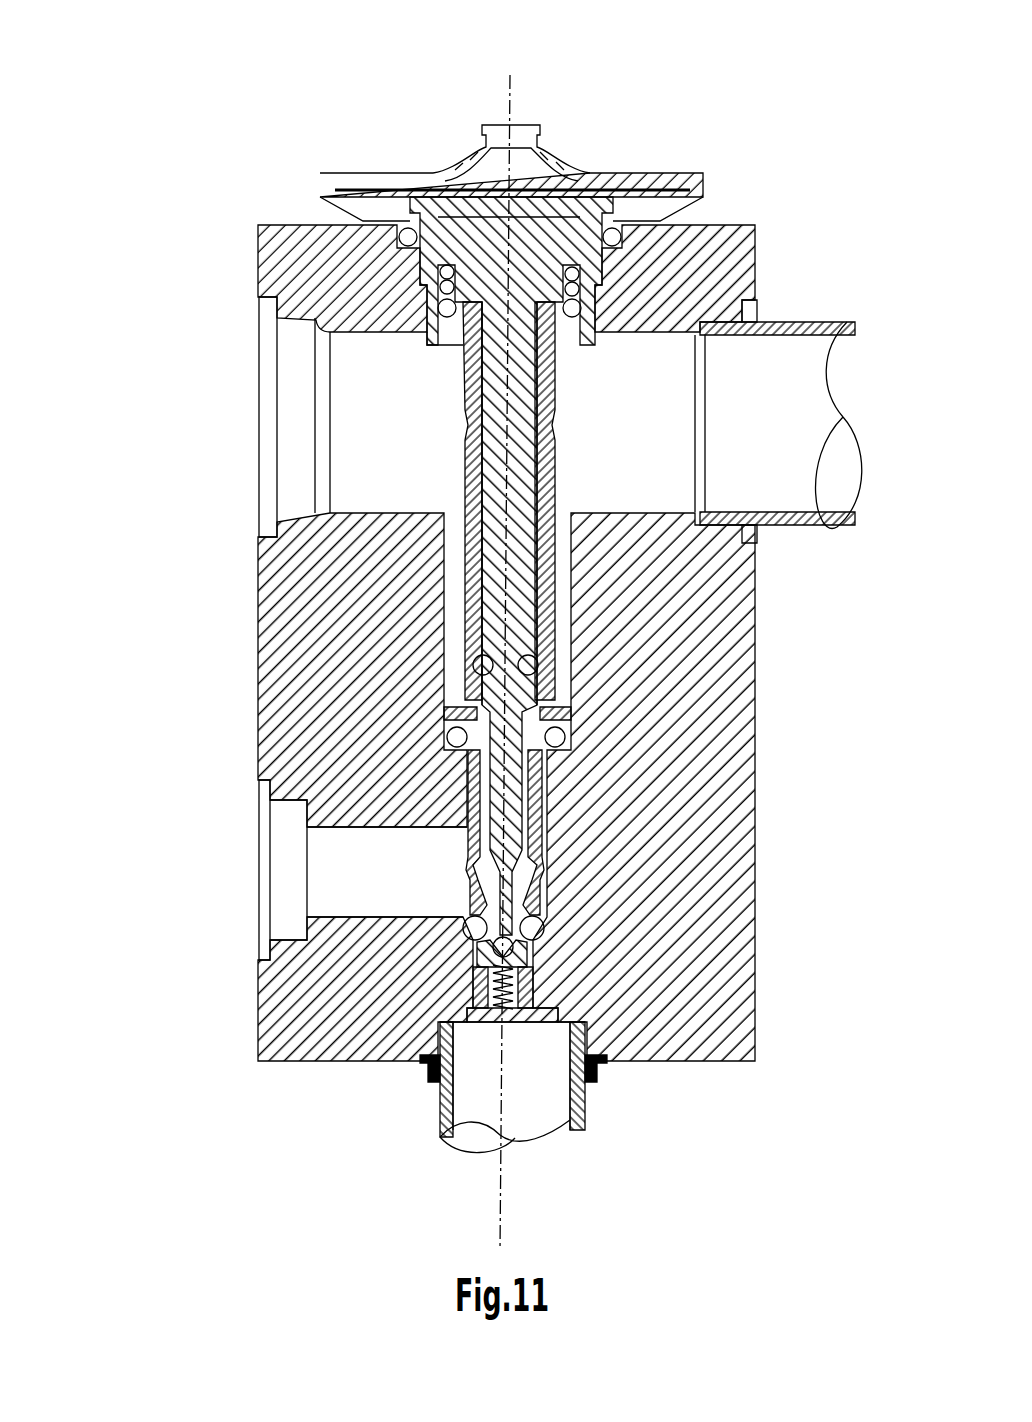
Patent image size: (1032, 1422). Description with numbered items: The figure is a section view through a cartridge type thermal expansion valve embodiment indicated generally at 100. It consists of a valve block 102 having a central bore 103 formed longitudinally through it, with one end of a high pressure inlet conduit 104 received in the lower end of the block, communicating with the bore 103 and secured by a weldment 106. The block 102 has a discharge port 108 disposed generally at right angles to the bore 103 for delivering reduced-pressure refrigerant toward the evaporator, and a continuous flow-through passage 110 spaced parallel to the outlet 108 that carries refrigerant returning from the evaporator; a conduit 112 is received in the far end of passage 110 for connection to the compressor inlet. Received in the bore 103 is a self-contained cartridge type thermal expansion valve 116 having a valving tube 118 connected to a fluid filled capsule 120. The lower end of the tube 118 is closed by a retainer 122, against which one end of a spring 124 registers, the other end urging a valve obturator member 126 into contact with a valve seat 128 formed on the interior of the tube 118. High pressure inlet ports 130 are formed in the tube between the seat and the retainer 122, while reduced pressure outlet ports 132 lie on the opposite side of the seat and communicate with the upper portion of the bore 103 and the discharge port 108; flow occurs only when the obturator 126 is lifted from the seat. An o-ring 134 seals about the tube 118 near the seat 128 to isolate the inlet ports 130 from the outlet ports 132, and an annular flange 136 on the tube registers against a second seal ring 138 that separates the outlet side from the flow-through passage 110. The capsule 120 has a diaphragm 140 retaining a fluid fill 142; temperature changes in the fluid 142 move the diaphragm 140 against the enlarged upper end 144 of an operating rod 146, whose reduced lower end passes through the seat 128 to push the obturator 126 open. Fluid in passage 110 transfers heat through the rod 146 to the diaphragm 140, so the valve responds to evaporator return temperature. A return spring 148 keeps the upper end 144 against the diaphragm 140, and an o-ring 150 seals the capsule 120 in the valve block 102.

The thermal expansion valve assembly 100 is at (182, 762).
The valve block 102 is at (262, 620).
The central bore 103 is at (455, 605).
The high pressure inlet conduit 104 is at (440, 1100).
The weldment 106 is at (594, 1067).
The discharge port 108 is at (305, 945).
The flow-through passage 110 is at (340, 512).
The conduit 112 is at (827, 320).
The cartridge type thermal expansion valve 116 is at (455, 422).
The valving tube 118 is at (543, 557).
The fluid filled capsule 120 is at (322, 176).
The retainer 122 is at (580, 1083).
The spring 124 is at (565, 1000).
The valve obturator member 126 is at (478, 928).
The valve seat 128 is at (490, 985).
The high pressure inlet ports 130 is at (470, 1000).
The reduced pressure outlet ports 132 is at (470, 880).
The o-ring 134 is at (543, 927).
The annular flange 136 is at (470, 718).
The second seal ring 138 is at (562, 748).
The diaphragm 140 is at (447, 213).
The fluid fill 142 is at (497, 172).
The enlarged upper end 144 is at (640, 175).
The operating rod 146 is at (480, 330).
The return spring 148 is at (442, 300).
The o-ring 150 is at (617, 243).